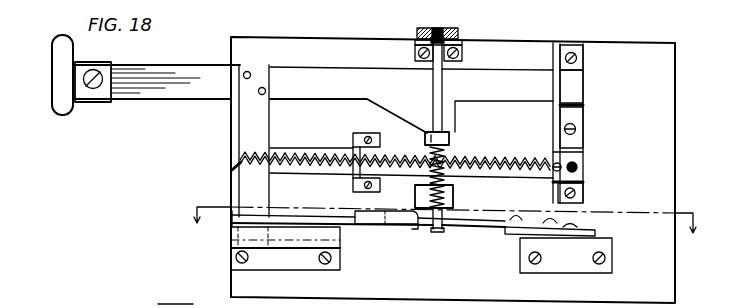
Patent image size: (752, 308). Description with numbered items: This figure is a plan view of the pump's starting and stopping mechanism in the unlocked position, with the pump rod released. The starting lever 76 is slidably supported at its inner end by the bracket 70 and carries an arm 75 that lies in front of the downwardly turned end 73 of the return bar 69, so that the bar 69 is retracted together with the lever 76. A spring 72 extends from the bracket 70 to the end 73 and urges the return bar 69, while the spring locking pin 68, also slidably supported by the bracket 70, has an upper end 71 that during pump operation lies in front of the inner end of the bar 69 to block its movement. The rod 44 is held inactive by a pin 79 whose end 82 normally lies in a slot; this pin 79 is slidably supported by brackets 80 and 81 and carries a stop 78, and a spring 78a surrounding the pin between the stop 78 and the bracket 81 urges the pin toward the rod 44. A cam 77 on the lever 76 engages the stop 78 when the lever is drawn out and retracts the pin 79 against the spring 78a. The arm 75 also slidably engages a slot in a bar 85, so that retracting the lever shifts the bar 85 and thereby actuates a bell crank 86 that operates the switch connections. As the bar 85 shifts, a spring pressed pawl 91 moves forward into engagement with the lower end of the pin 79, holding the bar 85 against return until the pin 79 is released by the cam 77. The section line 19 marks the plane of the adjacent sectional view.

The section line 19- 19 is at (444, 234).
The rod 44 is at (458, 30).
The spring locking pin 68 is at (578, 165).
The return bar 69 is at (497, 156).
The bracket 70 is at (585, 152).
The upper end of spring locking pin 71 is at (584, 172).
The spring 72 is at (296, 156).
The downwardly turned end 73 is at (238, 162).
The arm 75 is at (252, 112).
The lever 76 is at (95, 103).
The cam 77 is at (408, 123).
The stop 78 is at (450, 139).
The spring 78a is at (416, 184).
The pin 79 is at (441, 88).
The bracket 80 is at (463, 53).
The bracket 81 is at (454, 197).
The end of pin 82 is at (436, 28).
The bar 85 is at (228, 227).
The bell crank 86 is at (597, 233).
The spring pressed pawl 91 is at (383, 225).